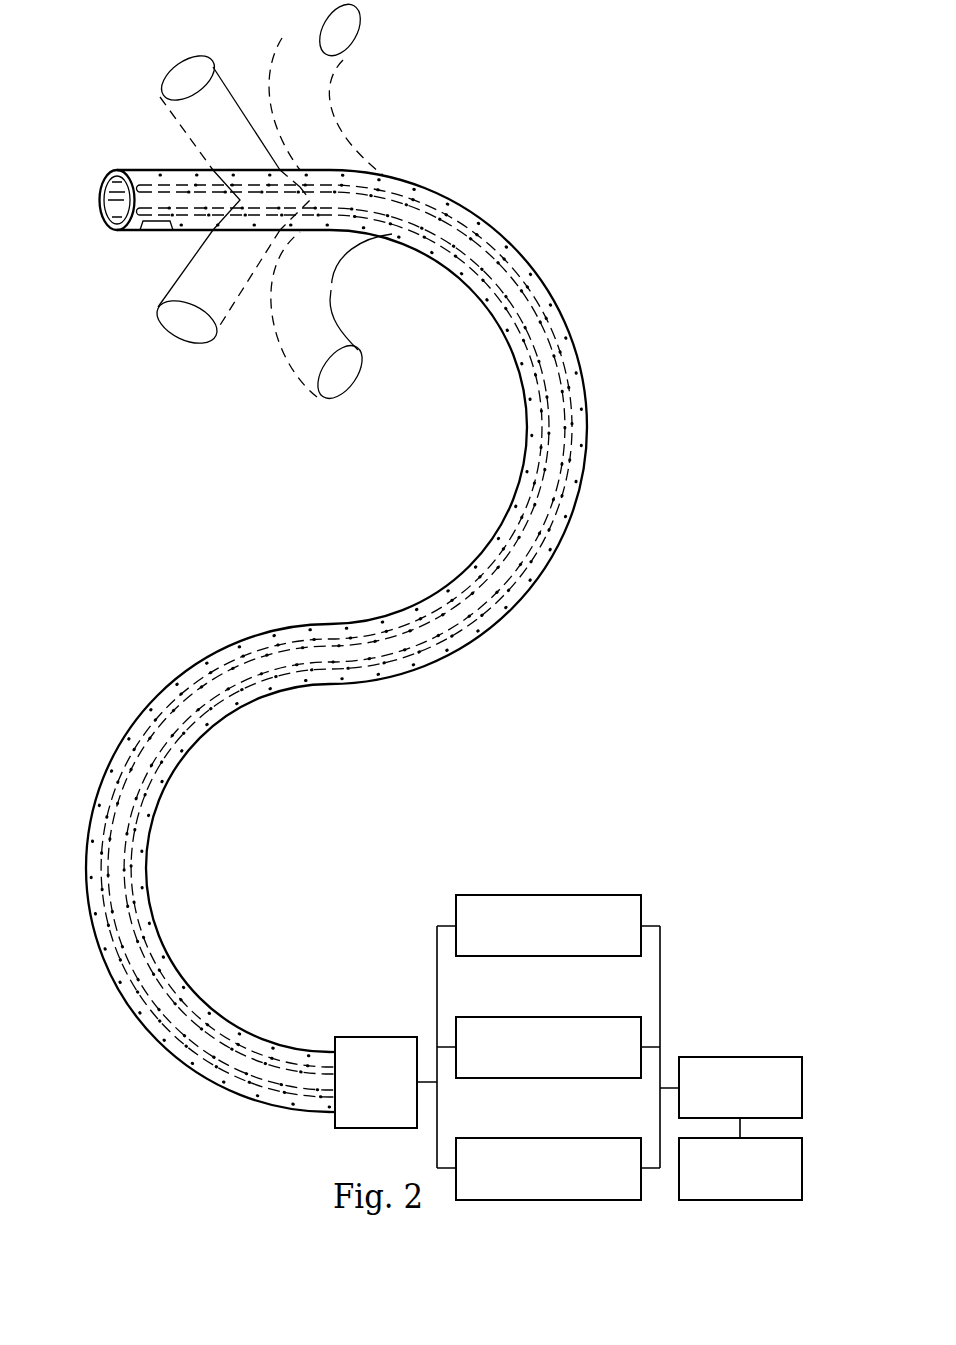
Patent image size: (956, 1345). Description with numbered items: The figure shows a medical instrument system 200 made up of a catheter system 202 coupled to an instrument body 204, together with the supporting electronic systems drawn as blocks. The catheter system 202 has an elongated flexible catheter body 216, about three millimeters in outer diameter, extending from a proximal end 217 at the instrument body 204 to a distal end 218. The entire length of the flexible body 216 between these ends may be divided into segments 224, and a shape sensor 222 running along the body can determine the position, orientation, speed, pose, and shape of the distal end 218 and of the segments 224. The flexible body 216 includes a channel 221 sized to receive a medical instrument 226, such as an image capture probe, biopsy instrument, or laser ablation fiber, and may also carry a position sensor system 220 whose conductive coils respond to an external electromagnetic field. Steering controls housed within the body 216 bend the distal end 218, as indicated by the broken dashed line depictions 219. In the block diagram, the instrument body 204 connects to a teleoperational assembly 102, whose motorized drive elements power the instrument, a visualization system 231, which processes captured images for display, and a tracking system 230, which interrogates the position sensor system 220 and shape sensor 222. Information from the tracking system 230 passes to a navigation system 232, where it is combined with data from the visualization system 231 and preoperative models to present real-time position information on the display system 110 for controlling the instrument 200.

The medical instrument system 200 is at (561, 154).
The catheter system 202 is at (583, 356).
The instrument body 204 is at (394, 1097).
The flexible catheter body 216 is at (267, 632).
The proximal end 217 is at (304, 1131).
The distal end 218 is at (124, 152).
The broken dashed line depictions 219 is at (181, 60).
The position sensor system 220 is at (152, 231).
The channel 221 is at (110, 200).
The shape sensor 222 is at (571, 428).
The segments 224 is at (544, 569).
The medical instrument 226 is at (538, 458).
The teleoperational assembly 102 is at (547, 895).
The visualization system 231 is at (547, 1017).
The tracking system 230 is at (547, 1138).
The navigation system 232 is at (802, 1100).
The display system 110 is at (802, 1172).